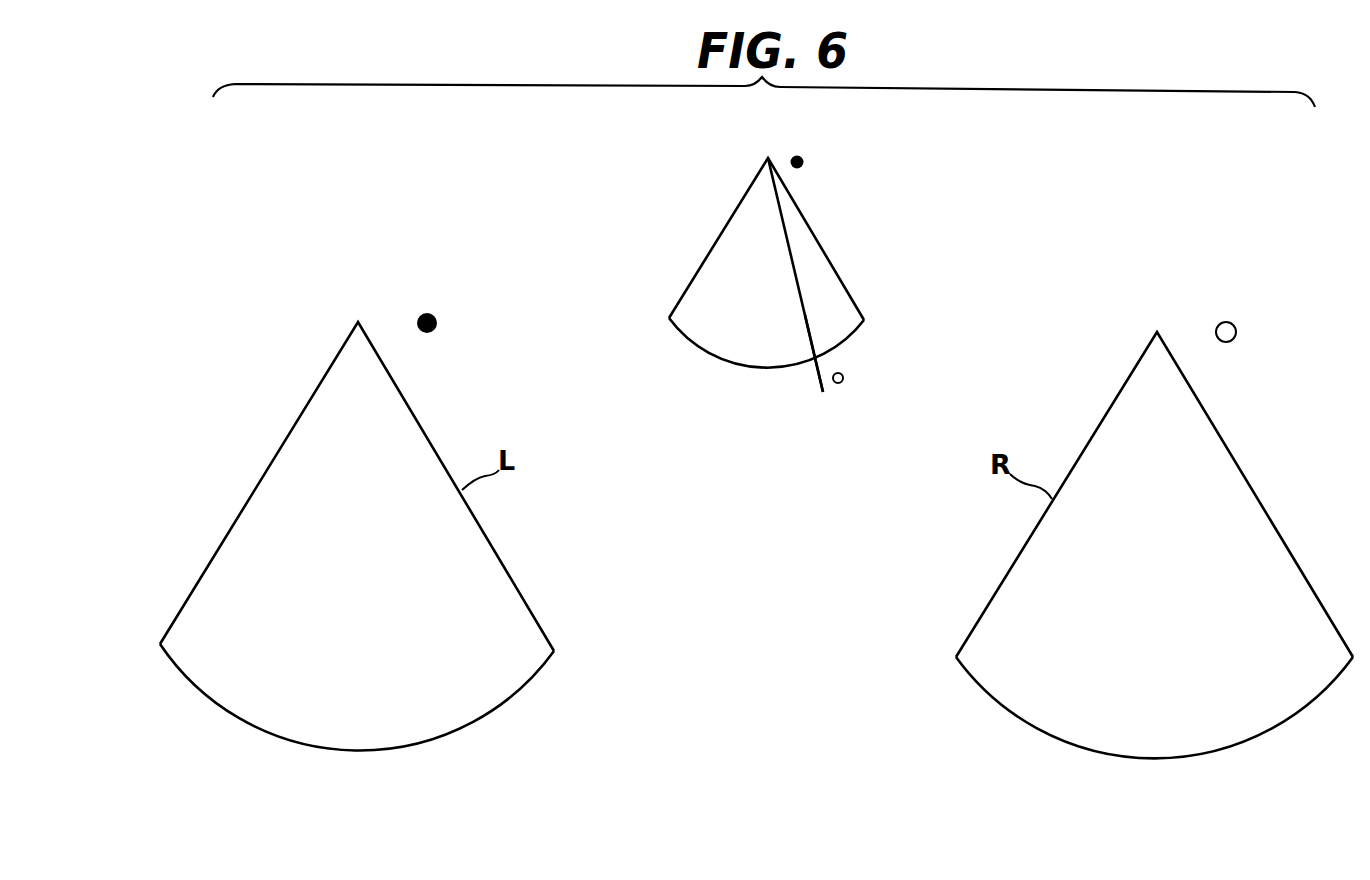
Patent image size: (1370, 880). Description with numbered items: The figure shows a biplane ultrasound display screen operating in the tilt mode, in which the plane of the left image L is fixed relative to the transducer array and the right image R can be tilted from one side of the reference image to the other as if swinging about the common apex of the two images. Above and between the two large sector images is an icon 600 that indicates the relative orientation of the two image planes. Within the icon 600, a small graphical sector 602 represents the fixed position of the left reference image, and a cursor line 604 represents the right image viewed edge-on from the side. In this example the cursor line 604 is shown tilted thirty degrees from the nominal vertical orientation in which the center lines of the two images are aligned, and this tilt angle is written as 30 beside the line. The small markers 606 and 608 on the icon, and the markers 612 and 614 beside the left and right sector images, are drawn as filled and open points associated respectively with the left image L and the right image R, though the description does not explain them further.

The icon 600 is at (824, 267).
The graphical sector 602 is at (822, 243).
The cursor line 604 is at (803, 308).
The filled point marker 606 is at (803, 160).
The open point marker 608 is at (844, 377).
The line end label 30 is at (824, 369).
The left filled point marker 612 is at (437, 322).
The right open point marker 614 is at (1237, 331).